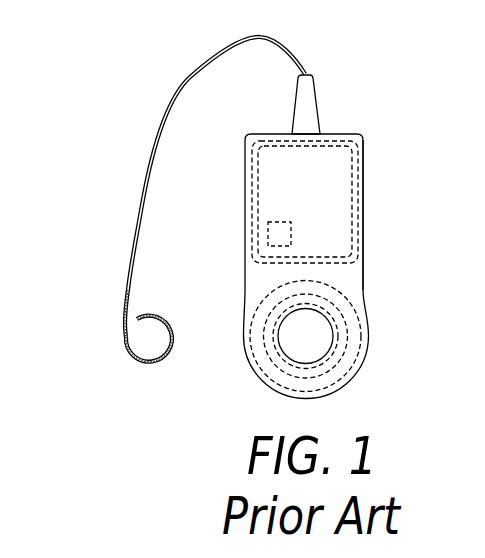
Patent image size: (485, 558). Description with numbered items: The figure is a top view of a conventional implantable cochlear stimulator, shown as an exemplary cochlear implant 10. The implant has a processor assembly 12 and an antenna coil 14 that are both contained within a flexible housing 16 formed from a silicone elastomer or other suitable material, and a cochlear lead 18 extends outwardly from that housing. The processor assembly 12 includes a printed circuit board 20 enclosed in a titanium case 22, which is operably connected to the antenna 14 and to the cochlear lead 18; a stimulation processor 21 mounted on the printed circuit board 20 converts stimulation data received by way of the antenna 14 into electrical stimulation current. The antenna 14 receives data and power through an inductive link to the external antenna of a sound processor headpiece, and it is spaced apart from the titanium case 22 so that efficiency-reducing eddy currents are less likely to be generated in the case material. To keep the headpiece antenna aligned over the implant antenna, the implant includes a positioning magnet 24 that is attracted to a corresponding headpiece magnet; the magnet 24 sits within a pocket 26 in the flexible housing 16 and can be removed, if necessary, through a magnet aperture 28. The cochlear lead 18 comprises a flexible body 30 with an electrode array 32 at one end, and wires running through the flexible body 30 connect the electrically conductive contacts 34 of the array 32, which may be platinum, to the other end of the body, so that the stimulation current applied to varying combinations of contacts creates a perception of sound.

The cochlear implant 10 is at (327, 35).
The processor assembly 12 is at (350, 137).
The antenna coil 14 is at (345, 297).
The flexible housing 16 is at (363, 236).
The cochlear lead 18 is at (191, 75).
The printed circuit board 20 is at (318, 187).
The stimulation processor 21 is at (268, 232).
The titanium case 22 is at (250, 163).
The positioning magnet 24 is at (292, 325).
The pocket 26 is at (272, 334).
The magnet aperture 28 is at (334, 337).
The flexible body 30 is at (172, 112).
The electrode array 32 is at (96, 326).
The electrically conductive contacts 34 is at (132, 352).